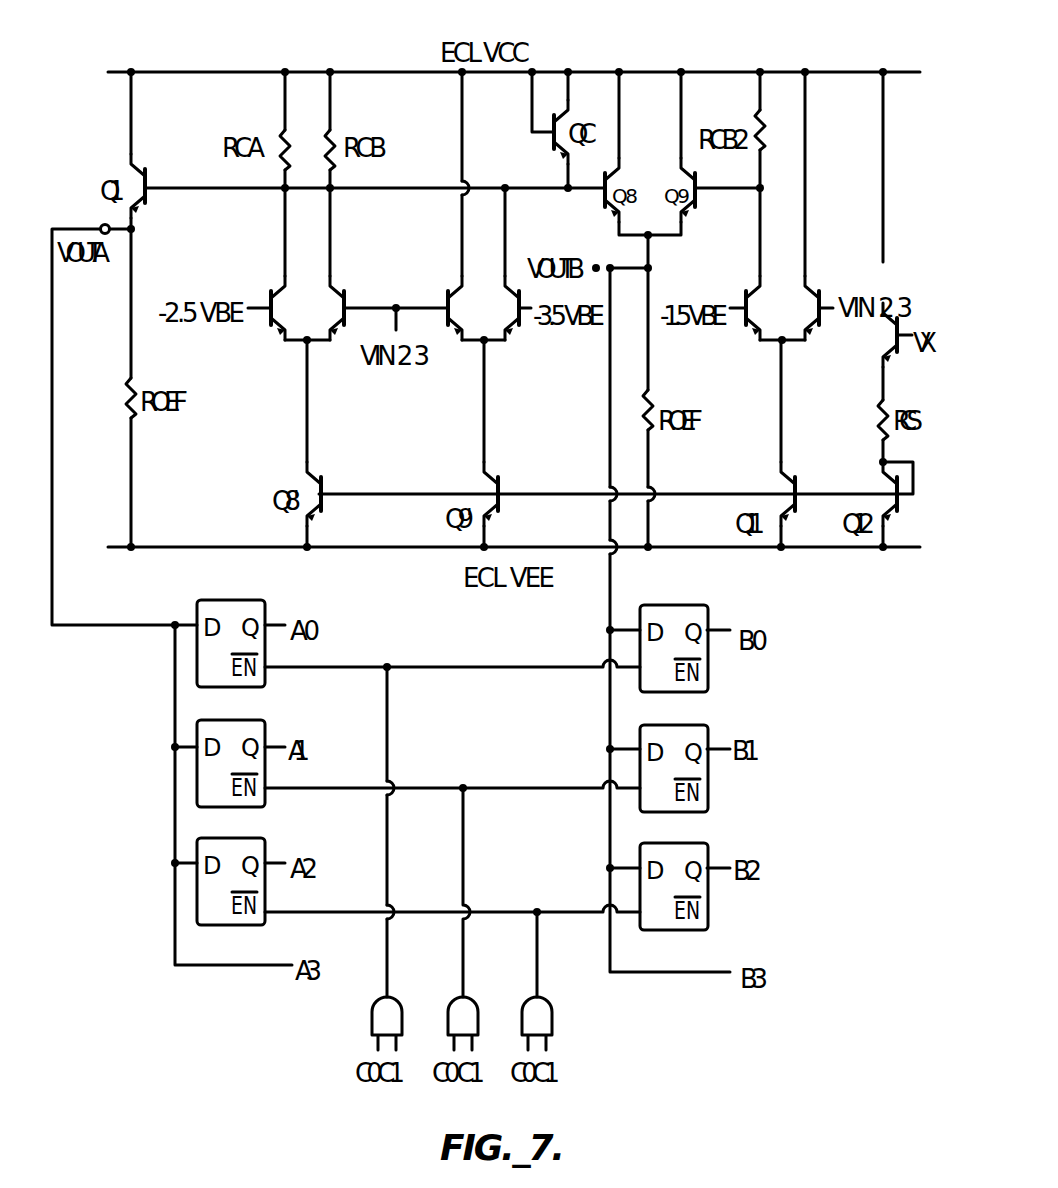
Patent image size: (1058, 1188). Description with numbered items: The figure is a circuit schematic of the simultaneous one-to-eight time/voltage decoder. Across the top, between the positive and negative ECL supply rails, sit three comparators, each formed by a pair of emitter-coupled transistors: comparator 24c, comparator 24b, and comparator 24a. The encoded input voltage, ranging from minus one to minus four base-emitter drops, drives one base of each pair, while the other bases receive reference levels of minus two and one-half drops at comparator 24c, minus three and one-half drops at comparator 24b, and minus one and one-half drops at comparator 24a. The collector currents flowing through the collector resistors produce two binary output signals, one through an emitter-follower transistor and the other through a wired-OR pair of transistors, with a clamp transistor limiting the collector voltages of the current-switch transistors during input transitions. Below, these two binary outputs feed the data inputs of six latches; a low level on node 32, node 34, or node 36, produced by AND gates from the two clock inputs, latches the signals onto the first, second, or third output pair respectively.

The comparator 24a is at (799, 283).
The comparator 24b is at (502, 275).
The comparator 24c is at (322, 271).
The node 32 is at (452, 828).
The node 34 is at (452, 889).
The node 36 is at (452, 951).